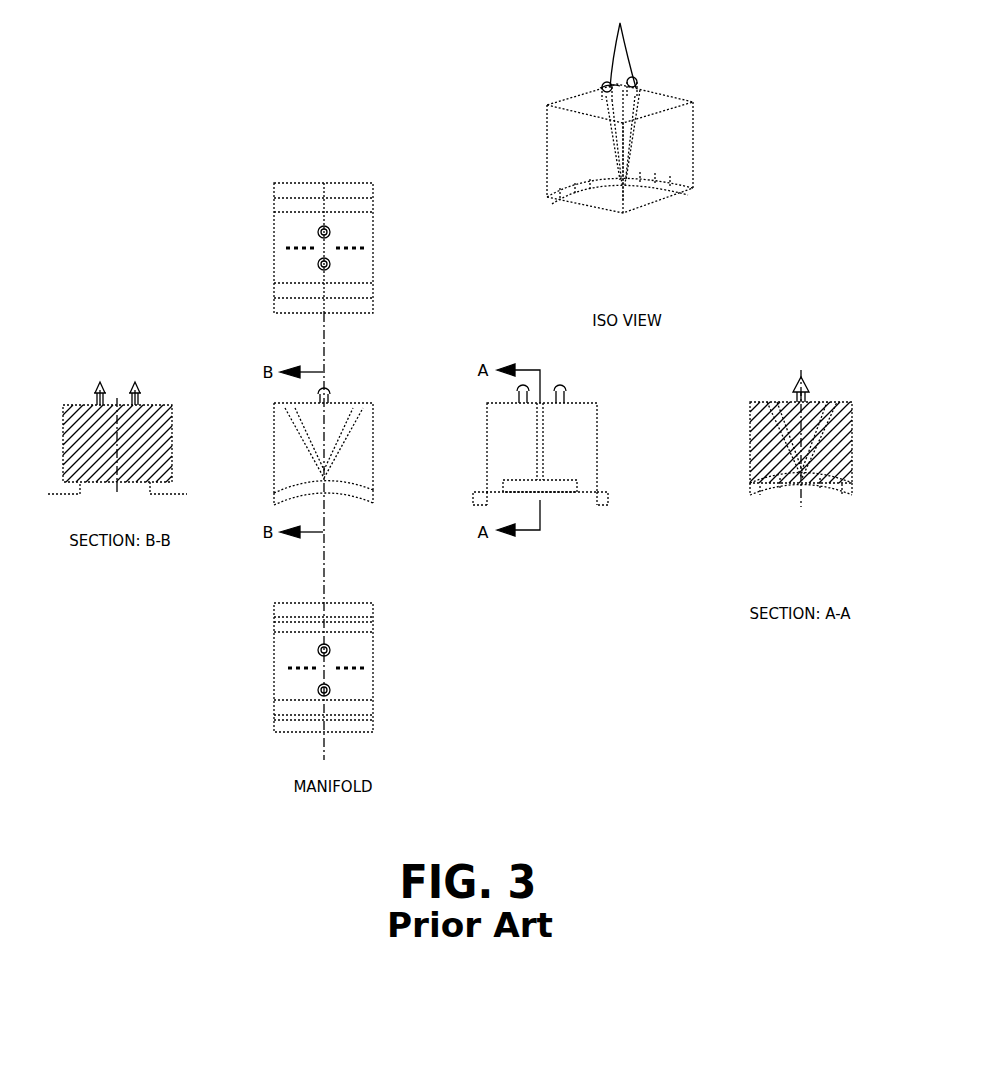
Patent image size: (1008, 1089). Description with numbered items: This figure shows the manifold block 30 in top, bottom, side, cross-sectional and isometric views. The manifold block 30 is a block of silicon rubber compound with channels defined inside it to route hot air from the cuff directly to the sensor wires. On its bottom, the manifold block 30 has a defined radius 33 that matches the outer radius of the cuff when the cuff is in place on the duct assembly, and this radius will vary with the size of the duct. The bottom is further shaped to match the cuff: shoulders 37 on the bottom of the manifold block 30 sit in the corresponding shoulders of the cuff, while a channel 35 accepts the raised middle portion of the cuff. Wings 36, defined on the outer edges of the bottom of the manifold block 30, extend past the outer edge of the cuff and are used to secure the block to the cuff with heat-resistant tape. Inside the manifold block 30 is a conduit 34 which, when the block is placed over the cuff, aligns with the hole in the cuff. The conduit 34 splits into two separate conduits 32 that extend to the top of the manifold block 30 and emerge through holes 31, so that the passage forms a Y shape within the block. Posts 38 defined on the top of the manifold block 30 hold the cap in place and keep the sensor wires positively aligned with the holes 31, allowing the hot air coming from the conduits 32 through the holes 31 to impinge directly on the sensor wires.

The manifold block 30 is at (720, 108).
The holes 31 is at (602, 100).
The conduits 32 is at (765, 400).
The defined radius 33 is at (562, 200).
The conduit 34 is at (327, 668).
The channel 35 is at (650, 195).
The wings 36 is at (617, 215).
The shoulders 37 is at (628, 208).
The posts 38 is at (617, 52).